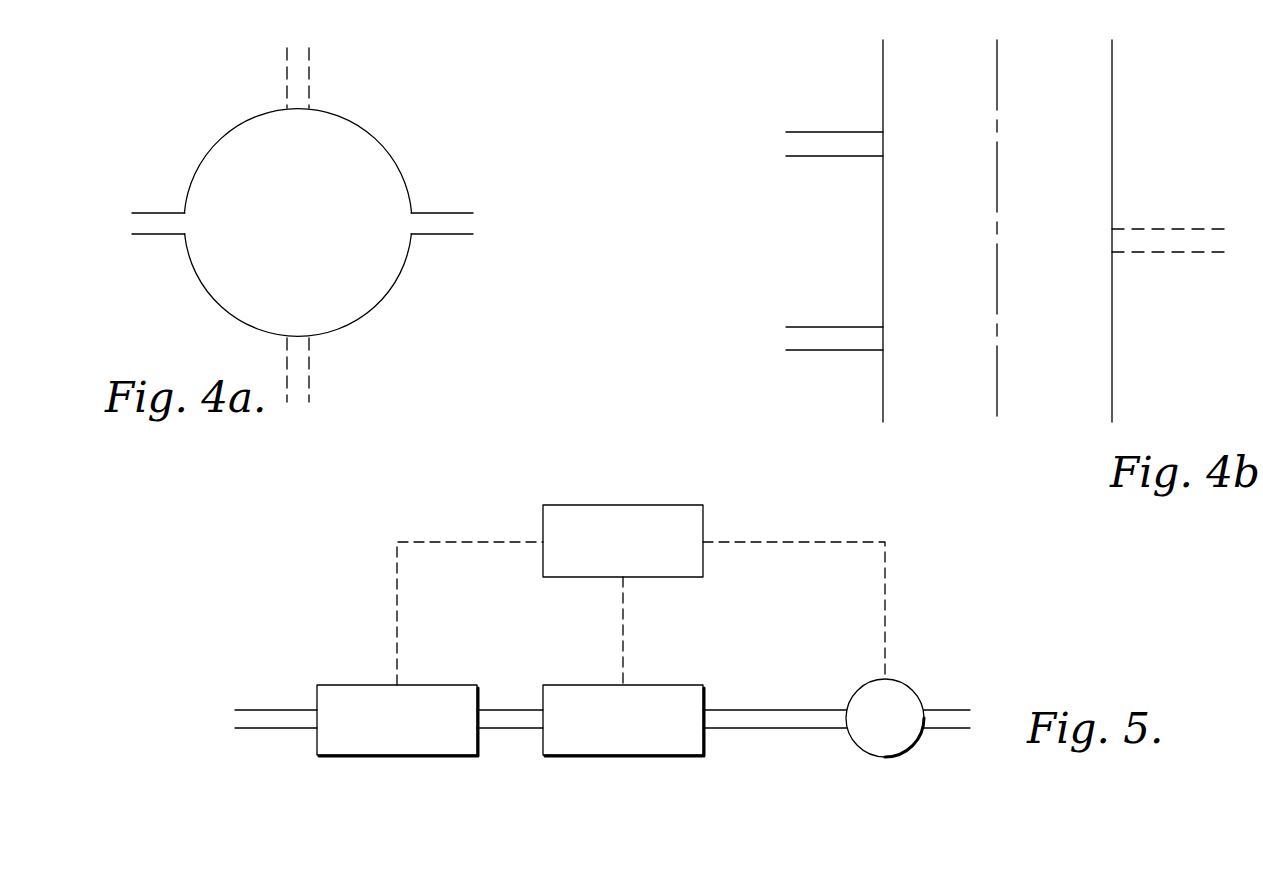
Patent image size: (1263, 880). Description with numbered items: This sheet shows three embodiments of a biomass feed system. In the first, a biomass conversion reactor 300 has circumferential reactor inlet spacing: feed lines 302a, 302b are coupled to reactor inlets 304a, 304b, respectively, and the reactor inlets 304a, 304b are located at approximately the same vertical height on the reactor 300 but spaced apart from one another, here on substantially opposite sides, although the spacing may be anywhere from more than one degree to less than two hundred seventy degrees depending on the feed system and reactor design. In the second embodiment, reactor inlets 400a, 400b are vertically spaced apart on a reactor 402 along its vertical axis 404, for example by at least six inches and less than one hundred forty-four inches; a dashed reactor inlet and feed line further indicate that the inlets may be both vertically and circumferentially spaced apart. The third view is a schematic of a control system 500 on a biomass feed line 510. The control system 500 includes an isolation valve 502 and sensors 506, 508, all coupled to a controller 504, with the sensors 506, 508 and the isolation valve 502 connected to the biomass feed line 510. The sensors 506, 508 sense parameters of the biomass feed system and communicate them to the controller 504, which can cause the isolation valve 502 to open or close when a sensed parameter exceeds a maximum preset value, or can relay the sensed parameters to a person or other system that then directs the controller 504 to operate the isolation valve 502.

In FIG. 4A, the biomass conversion reactor 300 is at (232, 127).
In FIG. 4A, the feed line 302a is at (144, 236).
In FIG. 4A, the feed line 302b is at (444, 236).
In FIG. 4A, the reactor inlet 304a is at (184, 212).
In FIG. 4A, the reactor inlet 304b is at (412, 212).
In FIG. 4B, the reactor inlet 400a is at (883, 131).
In FIG. 4B, the reactor inlet 400b is at (883, 350).
In FIG. 4B, the reactor 402 is at (1113, 104).
In FIG. 4B, the vertical axis 404 is at (997, 422).
In FIG. 5, the control system 500 is at (330, 556).
In FIG. 5, the isolation valve 502 is at (912, 688).
In FIG. 5, the controller 504 is at (623, 505).
In FIG. 5, the sensor 506 is at (342, 685).
In FIG. 5, the sensor 508 is at (683, 685).
In FIG. 5, the biomass feed line 510 is at (250, 730).